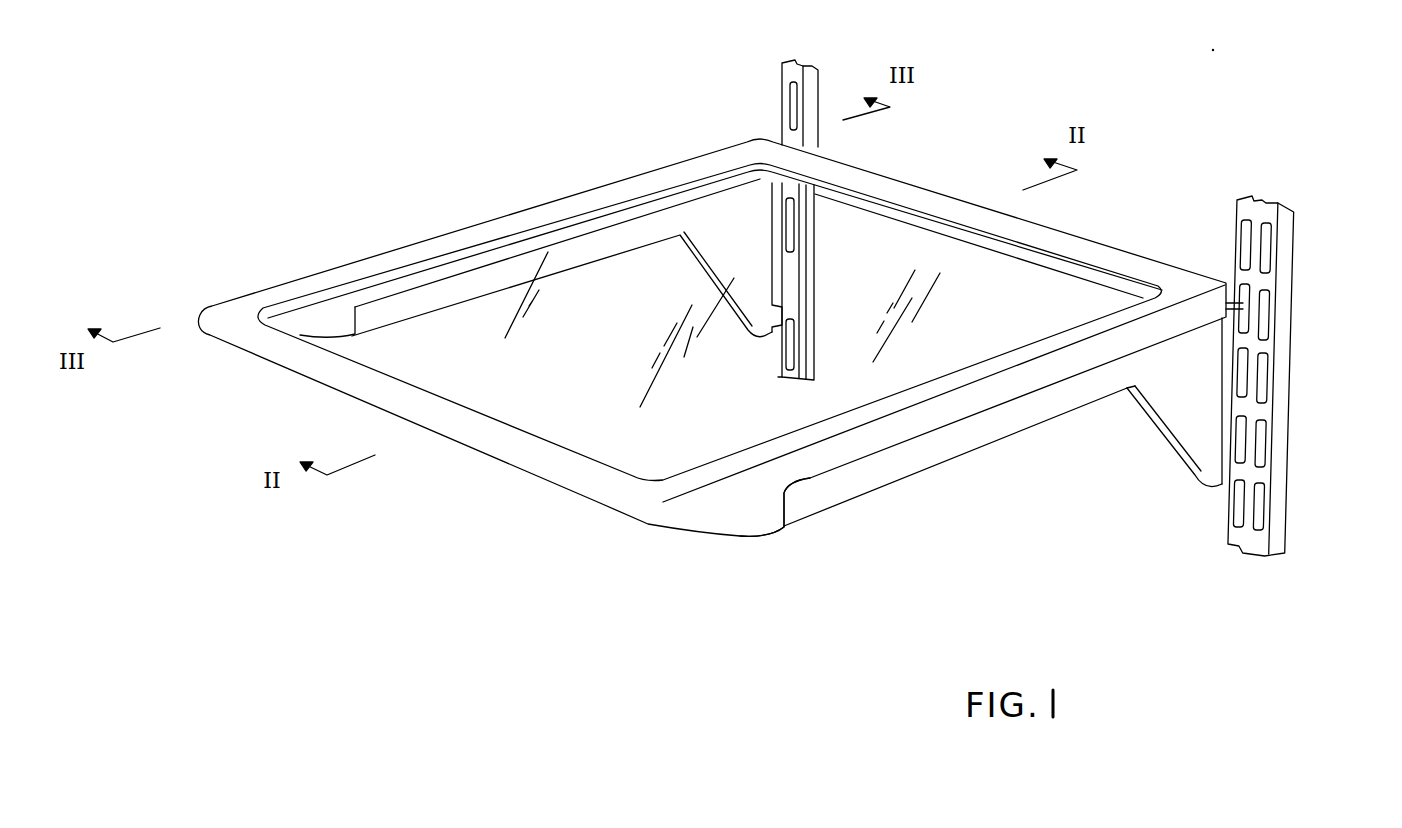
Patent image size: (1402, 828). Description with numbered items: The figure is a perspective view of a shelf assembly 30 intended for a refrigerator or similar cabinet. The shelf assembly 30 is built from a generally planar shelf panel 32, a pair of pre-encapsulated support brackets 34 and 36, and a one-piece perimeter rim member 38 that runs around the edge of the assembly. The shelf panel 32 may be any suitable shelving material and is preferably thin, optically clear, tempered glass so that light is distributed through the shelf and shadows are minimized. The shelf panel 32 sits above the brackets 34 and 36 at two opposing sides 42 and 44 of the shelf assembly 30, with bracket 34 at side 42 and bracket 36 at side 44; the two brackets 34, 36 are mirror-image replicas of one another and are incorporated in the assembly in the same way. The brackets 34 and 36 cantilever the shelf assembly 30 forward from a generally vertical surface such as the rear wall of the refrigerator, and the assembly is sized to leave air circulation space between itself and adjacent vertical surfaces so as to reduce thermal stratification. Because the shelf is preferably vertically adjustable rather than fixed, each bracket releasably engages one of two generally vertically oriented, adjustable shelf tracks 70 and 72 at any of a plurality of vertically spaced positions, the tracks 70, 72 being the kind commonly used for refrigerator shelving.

The shelf assembly 30 is at (713, 418).
The shelf panel 32 is at (1007, 277).
The support bracket 34 is at (613, 235).
The support bracket 36 is at (1038, 410).
The perimeter rim member 38 is at (740, 507).
The side 42 is at (406, 213).
The side 44 is at (1003, 454).
The shelf track 70 is at (781, 76).
The shelf track 72 is at (1290, 227).